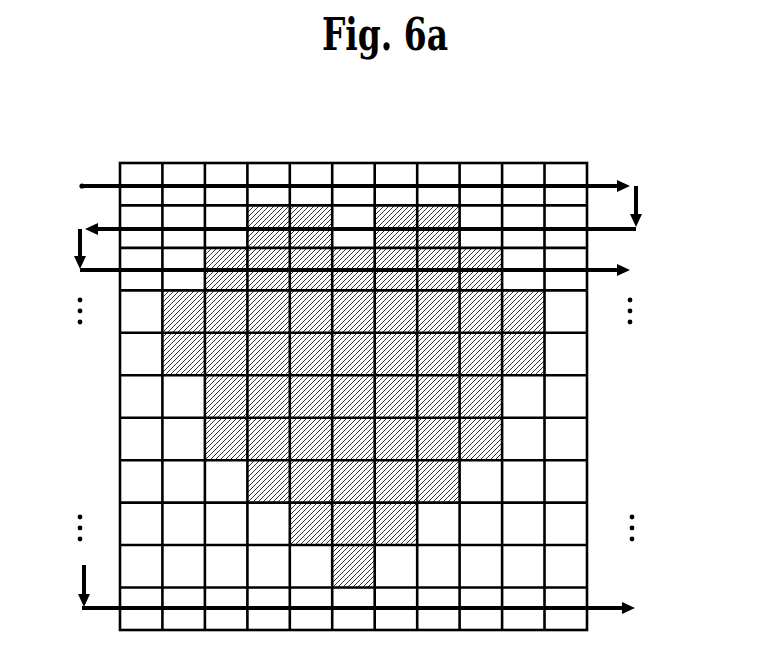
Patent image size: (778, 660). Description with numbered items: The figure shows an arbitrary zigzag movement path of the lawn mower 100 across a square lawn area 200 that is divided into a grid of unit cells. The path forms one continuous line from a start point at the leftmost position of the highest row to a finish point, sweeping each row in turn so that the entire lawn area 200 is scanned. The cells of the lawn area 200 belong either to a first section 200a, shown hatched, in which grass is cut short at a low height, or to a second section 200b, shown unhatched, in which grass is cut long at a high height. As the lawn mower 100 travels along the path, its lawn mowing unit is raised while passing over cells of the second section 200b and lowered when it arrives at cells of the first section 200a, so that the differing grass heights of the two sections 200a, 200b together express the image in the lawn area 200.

The lawn area 200 is at (397, 163).
The first section 200a is at (545, 347).
The second section 200b is at (523, 438).
The lawn mower 100 is at (625, 185).